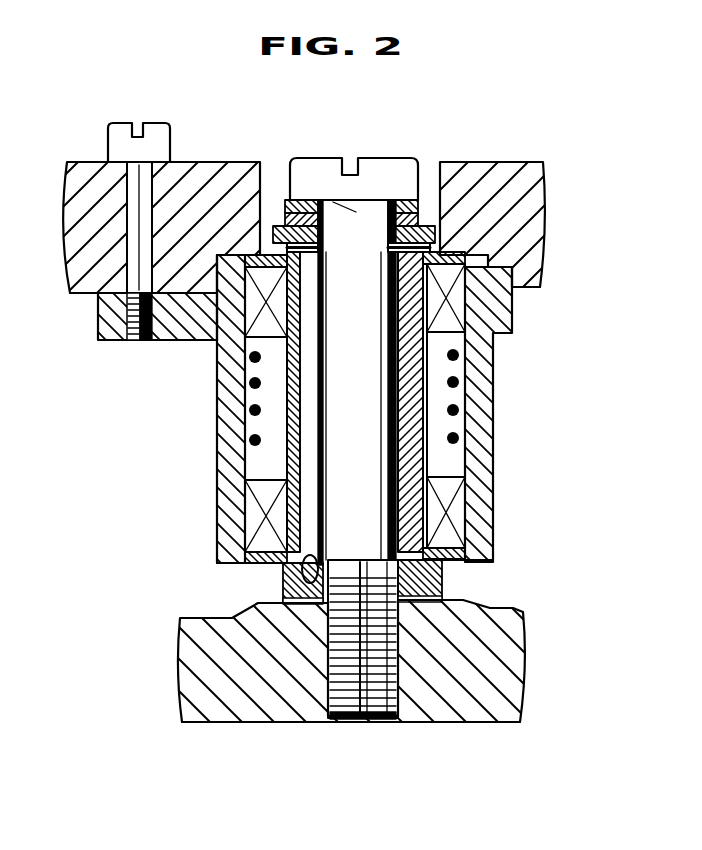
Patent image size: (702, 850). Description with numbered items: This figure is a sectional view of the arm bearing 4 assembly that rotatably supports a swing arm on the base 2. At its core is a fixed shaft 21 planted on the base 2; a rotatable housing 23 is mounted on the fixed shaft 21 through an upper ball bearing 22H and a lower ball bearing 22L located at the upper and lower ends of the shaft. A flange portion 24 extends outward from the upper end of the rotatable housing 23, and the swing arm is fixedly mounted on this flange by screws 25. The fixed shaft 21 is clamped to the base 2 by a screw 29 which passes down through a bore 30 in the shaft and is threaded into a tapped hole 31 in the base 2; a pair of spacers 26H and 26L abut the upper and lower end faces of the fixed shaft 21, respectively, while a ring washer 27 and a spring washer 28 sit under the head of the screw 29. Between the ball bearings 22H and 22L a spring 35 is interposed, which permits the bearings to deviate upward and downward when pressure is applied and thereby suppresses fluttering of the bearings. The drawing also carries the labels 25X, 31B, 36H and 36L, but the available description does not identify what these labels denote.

The base 2 is at (505, 610).
The arm bearing 4 is at (150, 448).
The fixed shaft 21 is at (283, 572).
The upper ball bearing 22H is at (460, 310).
The lower ball bearing 22L is at (462, 512).
The rotatable housing 23 is at (217, 382).
The flange portion 24 is at (98, 316).
The screw 25 is at (118, 125).
The threaded hole 25X is at (138, 341).
The upper spacer 26H is at (440, 240).
The lower spacer 26L is at (442, 572).
The ring washer 27 is at (443, 228).
The spring washer 28 is at (440, 210).
The screw 29 is at (404, 158).
The bore 30 is at (303, 605).
The tapped hole 31 is at (382, 720).
The bobbin 31B is at (402, 403).
The spring 35 is at (459, 438).
The upper elastic pad 36H is at (440, 245).
The lower elastic pad 36L is at (418, 604).